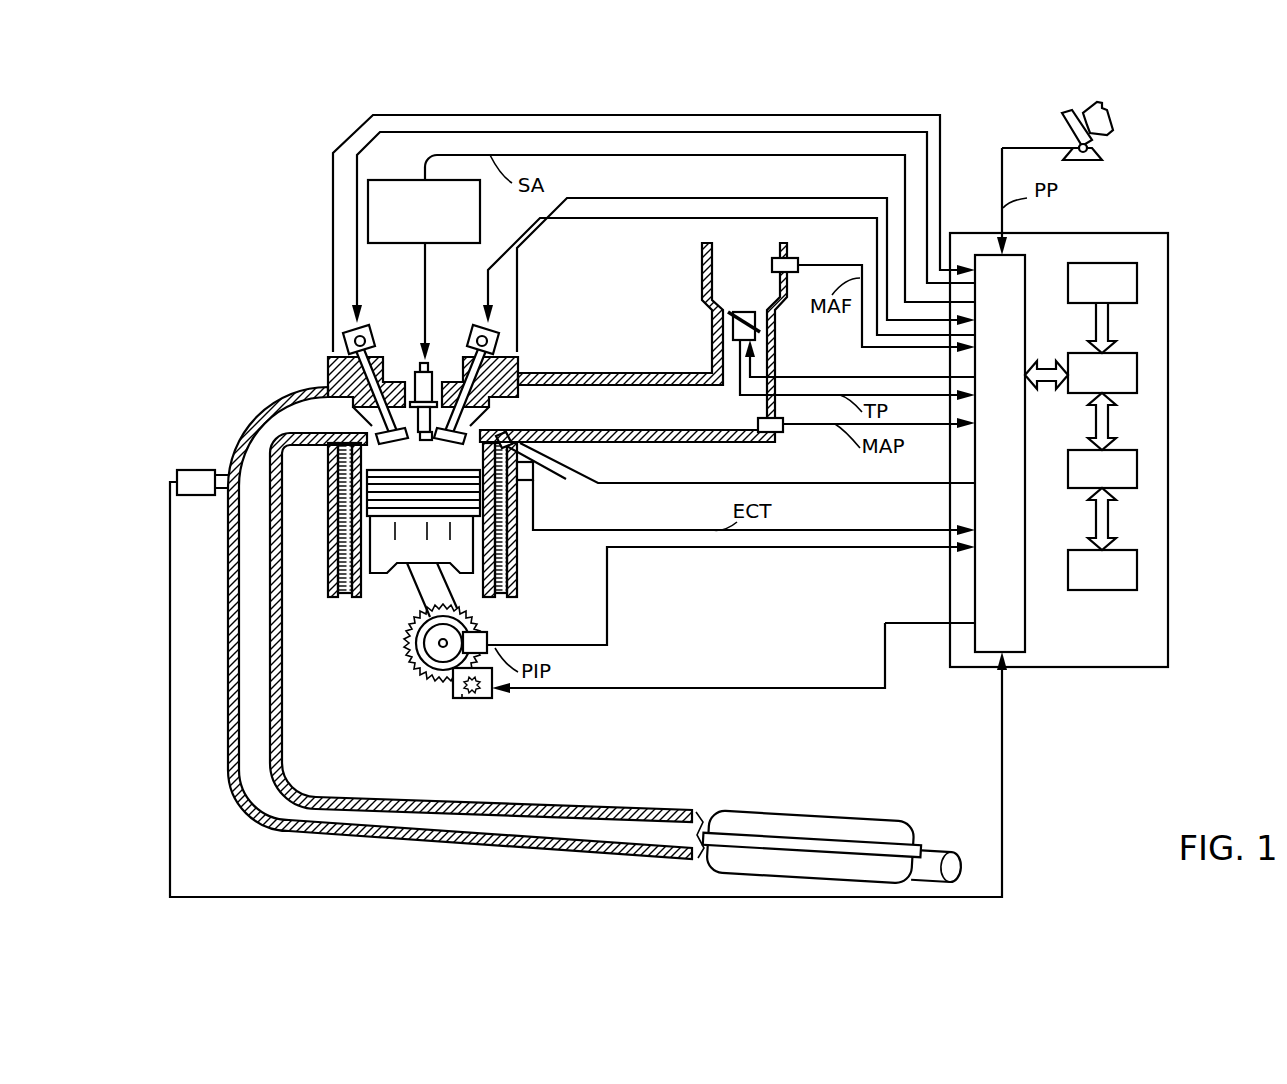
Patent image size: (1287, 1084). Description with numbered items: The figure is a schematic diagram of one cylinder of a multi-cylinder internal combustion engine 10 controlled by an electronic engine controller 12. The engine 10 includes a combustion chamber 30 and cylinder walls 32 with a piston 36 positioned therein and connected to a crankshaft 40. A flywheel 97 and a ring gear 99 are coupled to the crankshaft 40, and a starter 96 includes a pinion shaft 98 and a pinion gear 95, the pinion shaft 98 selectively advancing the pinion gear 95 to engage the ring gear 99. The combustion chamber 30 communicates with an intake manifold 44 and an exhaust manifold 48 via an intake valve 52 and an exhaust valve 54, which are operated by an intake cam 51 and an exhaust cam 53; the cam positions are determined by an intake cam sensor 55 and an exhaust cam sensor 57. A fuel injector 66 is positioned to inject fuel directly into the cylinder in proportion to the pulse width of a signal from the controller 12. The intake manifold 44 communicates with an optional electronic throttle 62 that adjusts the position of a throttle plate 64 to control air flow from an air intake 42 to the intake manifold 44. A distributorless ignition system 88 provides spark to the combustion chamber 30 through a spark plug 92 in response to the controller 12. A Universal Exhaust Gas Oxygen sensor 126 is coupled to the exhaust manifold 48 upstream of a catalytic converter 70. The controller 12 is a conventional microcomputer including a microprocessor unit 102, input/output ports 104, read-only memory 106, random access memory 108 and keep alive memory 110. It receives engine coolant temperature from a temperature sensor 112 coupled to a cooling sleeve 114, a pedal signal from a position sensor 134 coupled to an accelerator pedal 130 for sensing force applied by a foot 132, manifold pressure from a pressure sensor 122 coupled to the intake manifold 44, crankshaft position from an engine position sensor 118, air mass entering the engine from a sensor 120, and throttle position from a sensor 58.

The internal combustion engine 10 is at (258, 308).
The electronic engine controller 12 is at (1160, 233).
The combustion chamber 30 is at (422, 448).
The cylinder walls 32 is at (368, 583).
The piston 36 is at (407, 548).
The crankshaft 40 is at (435, 663).
The air intake 42 is at (731, 291).
The intake manifold 44 is at (668, 422).
The exhaust manifold 48 is at (285, 427).
The intake cam 51 is at (480, 325).
The intake valve 52 is at (463, 422).
The exhaust cam 53 is at (377, 323).
The exhaust valve 54 is at (378, 434).
The intake cam sensor 55 is at (497, 349).
The exhaust cam sensor 57 is at (350, 347).
The throttle position sensor 58 is at (733, 340).
The electronic throttle 62 is at (756, 318).
The throttle plate 64 is at (728, 318).
The fuel injector 66 is at (545, 470).
The catalytic converter 70 is at (718, 810).
The distributorless ignition system 88 is at (385, 180).
The spark plug 92 is at (430, 362).
The pinion gear 95 is at (483, 698).
The starter 96 is at (487, 698).
The flywheel 97 is at (418, 645).
The pinion shaft 98 is at (465, 697).
The ring gear 99 is at (440, 683).
The microprocessor unit 102 is at (1137, 375).
The input/output ports 104 is at (1025, 263).
The read-only memory 106 is at (1137, 283).
The random access memory 108 is at (1137, 470).
The keep alive memory 110 is at (1137, 570).
The temperature sensor 112 is at (533, 480).
The cooling sleeve 114 is at (503, 555).
The engine position sensor 118 is at (487, 636).
The air mass sensor 120 is at (792, 258).
The pressure sensor 122 is at (778, 432).
The Universal Exhaust Gas Oxygen sensor 126 is at (177, 475).
The accelerator pedal 130 is at (1062, 124).
The foot 132 is at (1110, 113).
The position sensor 134 is at (1093, 148).